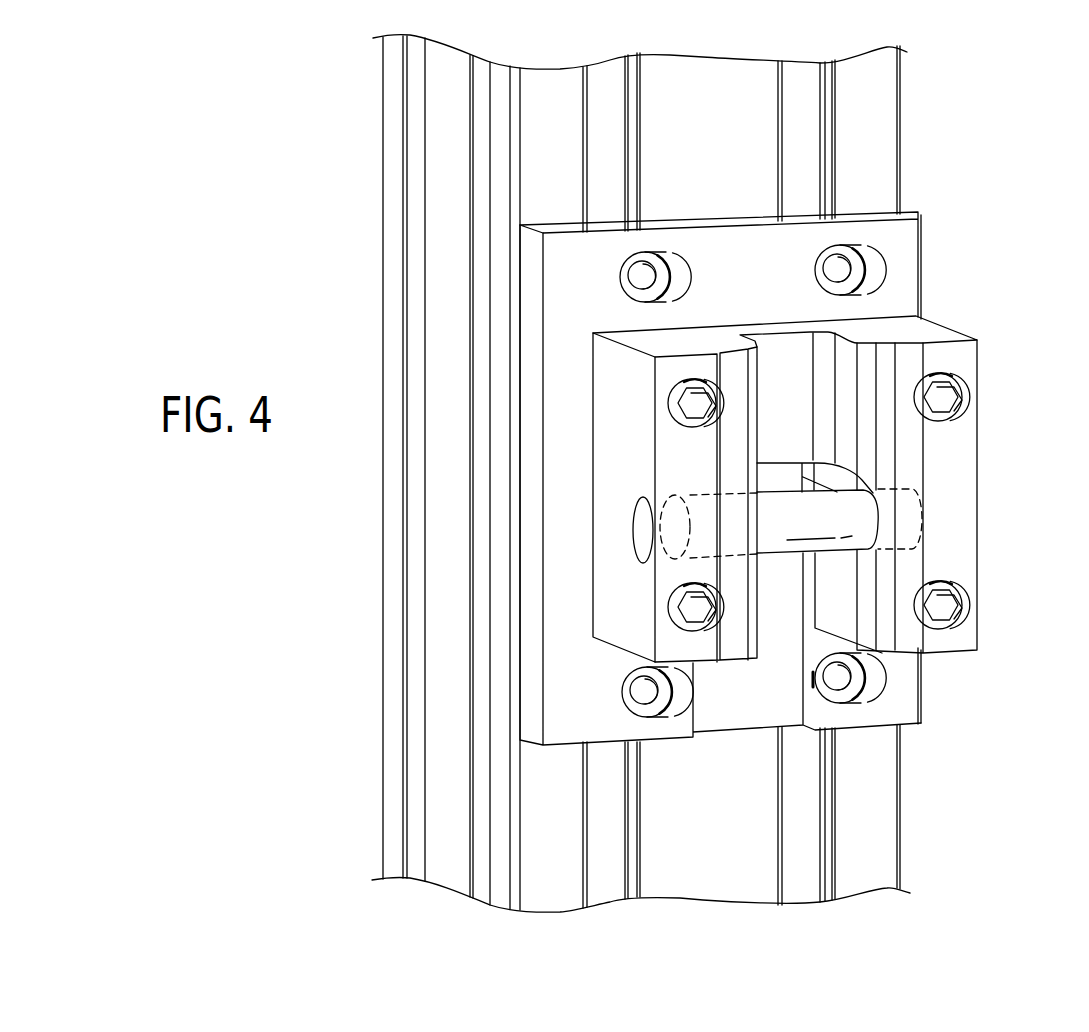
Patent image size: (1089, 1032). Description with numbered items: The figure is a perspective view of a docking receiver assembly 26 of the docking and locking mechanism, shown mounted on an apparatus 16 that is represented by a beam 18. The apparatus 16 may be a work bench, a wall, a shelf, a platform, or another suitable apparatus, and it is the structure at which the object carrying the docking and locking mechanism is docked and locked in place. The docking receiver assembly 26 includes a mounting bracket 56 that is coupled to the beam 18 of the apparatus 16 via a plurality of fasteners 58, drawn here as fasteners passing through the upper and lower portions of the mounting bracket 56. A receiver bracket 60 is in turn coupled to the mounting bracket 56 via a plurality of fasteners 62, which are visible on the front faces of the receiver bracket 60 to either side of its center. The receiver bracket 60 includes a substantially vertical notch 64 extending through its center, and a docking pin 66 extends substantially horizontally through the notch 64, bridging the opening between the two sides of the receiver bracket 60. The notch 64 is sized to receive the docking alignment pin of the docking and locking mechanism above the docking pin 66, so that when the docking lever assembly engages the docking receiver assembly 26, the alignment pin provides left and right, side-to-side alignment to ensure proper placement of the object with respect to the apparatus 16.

The apparatus 16 is at (363, 227).
The beam 18 is at (382, 332).
The first docking receiver assembly 26 is at (800, 478).
The mounting bracket 56 is at (908, 243).
The fasteners 58 is at (657, 700).
The receiver bracket 60 is at (819, 458).
The fasteners 62 is at (947, 399).
The notch 64 is at (789, 367).
The docking pin 66 is at (795, 520).